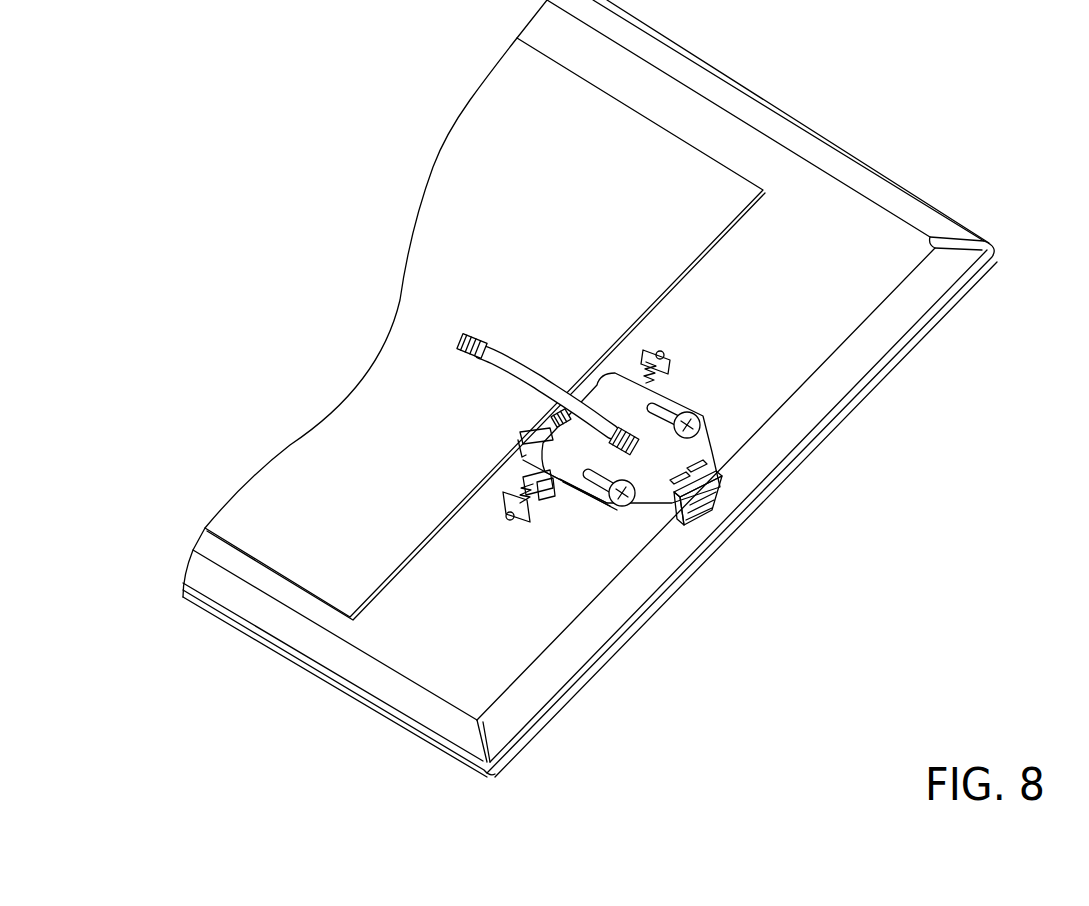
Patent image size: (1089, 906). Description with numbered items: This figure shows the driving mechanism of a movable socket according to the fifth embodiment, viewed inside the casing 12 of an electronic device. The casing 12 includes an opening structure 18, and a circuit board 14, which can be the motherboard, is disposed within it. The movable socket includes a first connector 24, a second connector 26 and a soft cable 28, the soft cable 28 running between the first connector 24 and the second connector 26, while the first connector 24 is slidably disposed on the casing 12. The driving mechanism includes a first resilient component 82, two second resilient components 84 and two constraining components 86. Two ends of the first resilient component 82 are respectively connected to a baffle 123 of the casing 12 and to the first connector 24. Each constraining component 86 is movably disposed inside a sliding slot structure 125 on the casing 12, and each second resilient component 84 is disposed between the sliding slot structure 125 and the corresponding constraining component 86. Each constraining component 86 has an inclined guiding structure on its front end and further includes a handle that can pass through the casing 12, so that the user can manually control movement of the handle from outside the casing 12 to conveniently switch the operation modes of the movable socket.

The casing 12 is at (868, 230).
The circuit board 14 is at (582, 170).
The opening structure 18 is at (720, 506).
The first connector 24 is at (680, 450).
The second connector 26 is at (481, 335).
The soft cable 28 is at (540, 372).
The first resilient component 82 is at (540, 440).
The second resilient component 84 is at (637, 373).
The constraining component 86 is at (652, 379).
The baffle 123 is at (505, 470).
The sliding slot structure 125 is at (543, 480).